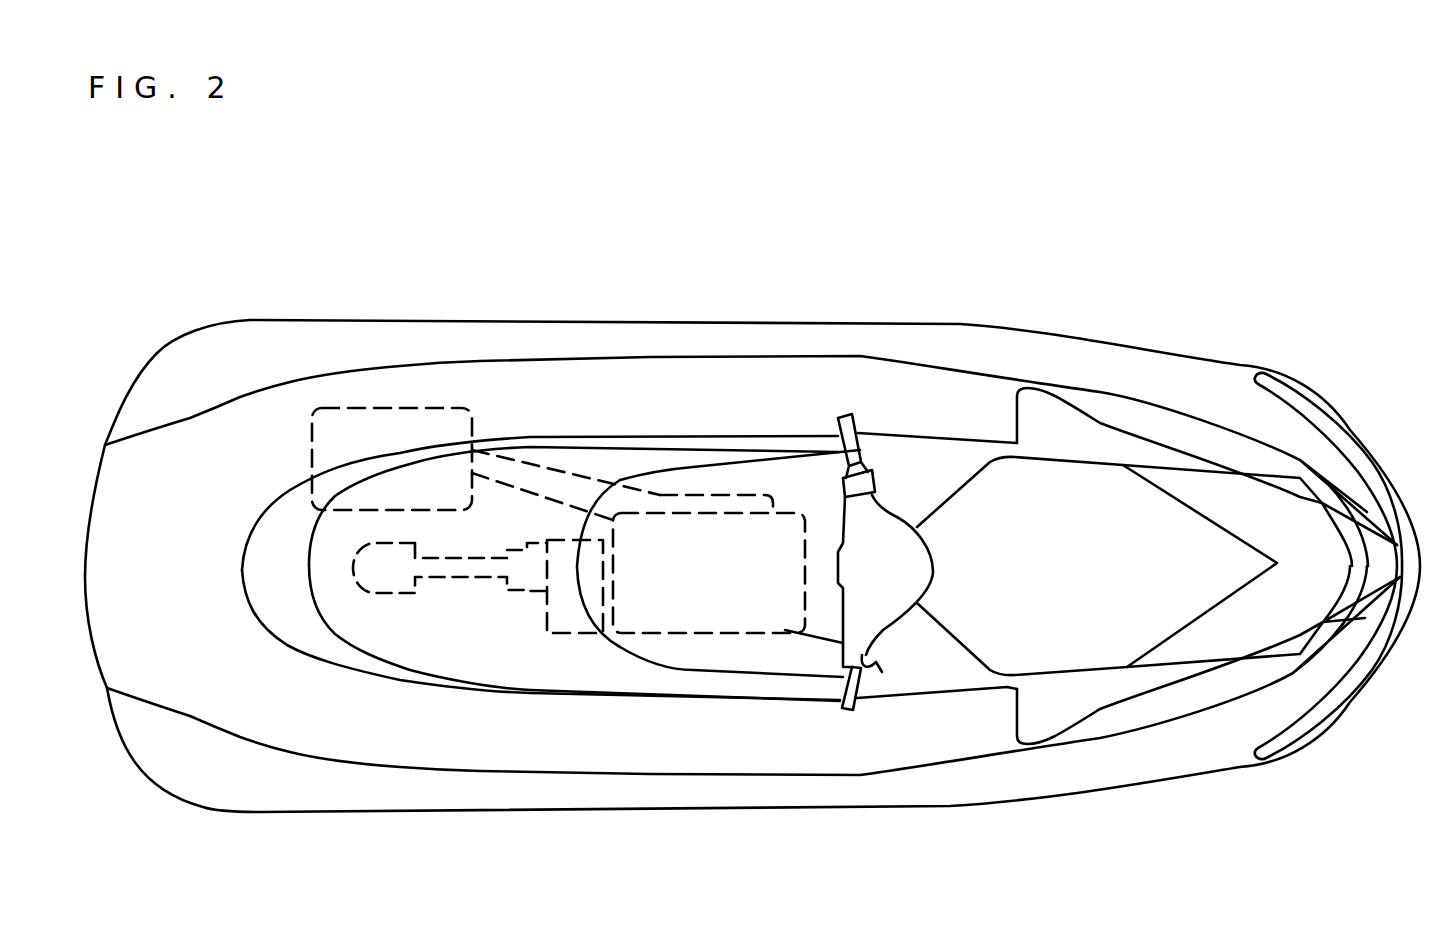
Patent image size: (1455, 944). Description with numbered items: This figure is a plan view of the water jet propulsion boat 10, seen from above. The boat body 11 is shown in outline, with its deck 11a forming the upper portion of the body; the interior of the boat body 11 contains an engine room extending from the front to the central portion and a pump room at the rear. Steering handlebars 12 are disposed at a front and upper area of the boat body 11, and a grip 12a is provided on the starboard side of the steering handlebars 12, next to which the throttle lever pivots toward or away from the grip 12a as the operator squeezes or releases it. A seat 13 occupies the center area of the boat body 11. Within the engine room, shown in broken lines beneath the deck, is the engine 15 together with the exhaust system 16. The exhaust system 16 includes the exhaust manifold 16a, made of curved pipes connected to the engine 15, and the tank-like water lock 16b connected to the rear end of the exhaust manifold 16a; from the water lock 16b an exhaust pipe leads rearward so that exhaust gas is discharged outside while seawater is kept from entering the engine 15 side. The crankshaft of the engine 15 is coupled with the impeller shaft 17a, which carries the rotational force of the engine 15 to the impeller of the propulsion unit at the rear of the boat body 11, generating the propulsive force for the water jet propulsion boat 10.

The water jet propulsion boat 10 is at (1032, 245).
The boat body 11 is at (857, 319).
The deck 11a is at (1395, 483).
The steering handlebars 12 is at (843, 487).
The grip 12a is at (858, 712).
The seat 13 is at (621, 650).
The engine 15 is at (708, 644).
The exhaust system 16 is at (514, 410).
The exhaust manifold 16a is at (664, 493).
The water lock 16b is at (312, 450).
The impeller shaft 17a is at (457, 580).